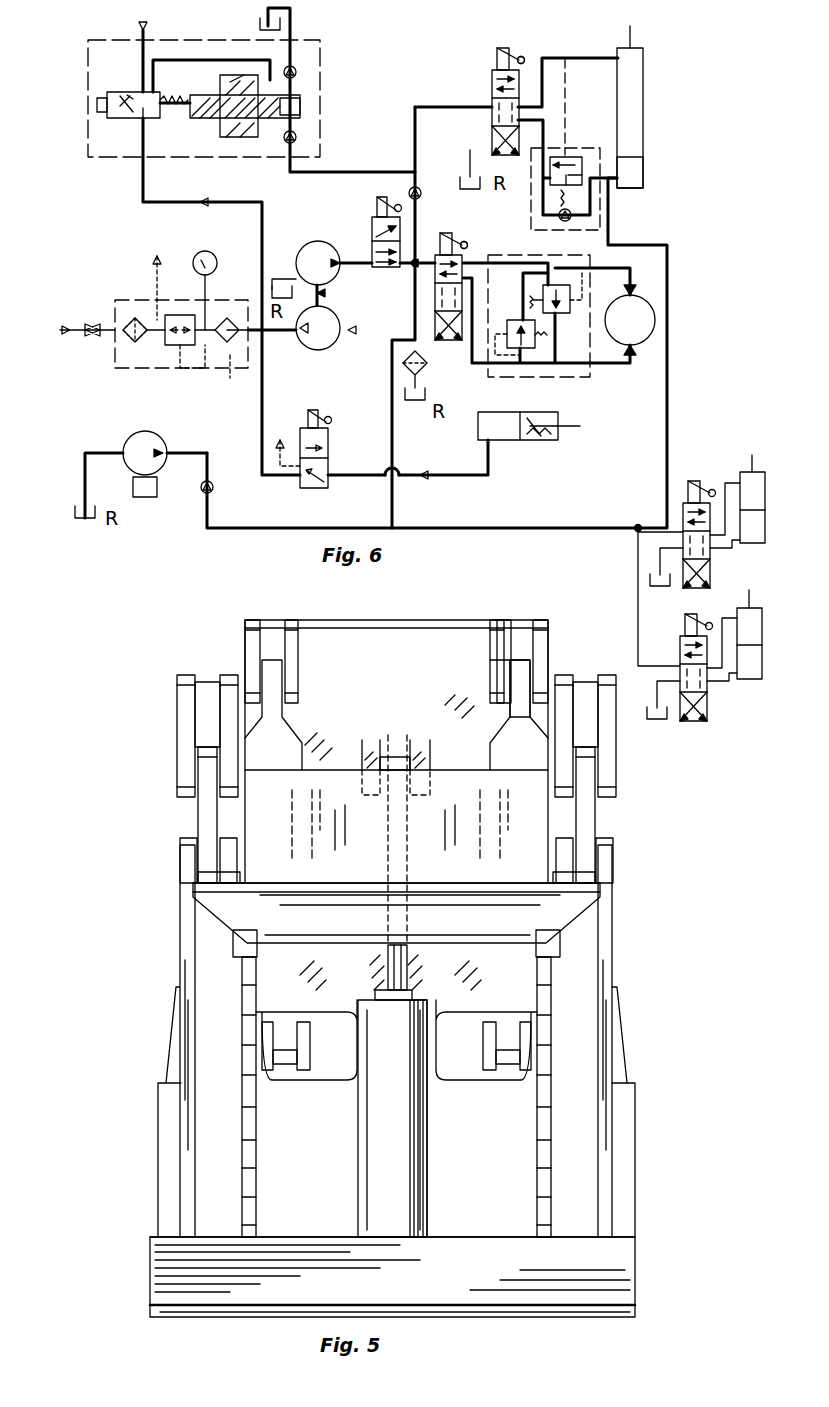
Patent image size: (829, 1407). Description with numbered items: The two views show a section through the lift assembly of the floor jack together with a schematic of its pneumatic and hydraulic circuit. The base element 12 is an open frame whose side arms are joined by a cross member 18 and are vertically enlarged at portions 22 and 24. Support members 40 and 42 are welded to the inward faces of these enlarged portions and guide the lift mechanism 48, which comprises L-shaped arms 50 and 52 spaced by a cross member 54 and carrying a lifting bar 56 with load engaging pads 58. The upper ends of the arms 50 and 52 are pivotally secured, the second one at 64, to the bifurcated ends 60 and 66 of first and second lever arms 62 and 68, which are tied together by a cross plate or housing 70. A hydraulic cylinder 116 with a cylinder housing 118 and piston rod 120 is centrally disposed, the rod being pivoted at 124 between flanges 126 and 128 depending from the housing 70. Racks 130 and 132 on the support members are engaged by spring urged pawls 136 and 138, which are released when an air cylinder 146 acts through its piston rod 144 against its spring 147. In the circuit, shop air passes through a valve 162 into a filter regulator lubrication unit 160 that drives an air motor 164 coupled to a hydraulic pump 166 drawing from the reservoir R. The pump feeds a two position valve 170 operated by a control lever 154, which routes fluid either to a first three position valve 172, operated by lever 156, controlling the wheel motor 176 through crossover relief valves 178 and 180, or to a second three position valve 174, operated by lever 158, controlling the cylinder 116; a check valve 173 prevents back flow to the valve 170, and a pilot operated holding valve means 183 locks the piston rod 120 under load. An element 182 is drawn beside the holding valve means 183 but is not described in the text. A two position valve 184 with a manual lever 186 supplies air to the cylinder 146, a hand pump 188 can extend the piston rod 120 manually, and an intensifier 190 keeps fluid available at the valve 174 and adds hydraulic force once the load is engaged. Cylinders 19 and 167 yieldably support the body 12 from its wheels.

In FIG. 5, the base element 12 is at (185, 1272).
In FIG. 5, the cross member 18 is at (620, 1262).
In FIG. 5, the vertically enlarged portion 22 is at (168, 1098).
In FIG. 5, the vertically enlarged portion 24 is at (623, 1115).
In FIG. 5, the support member 40 is at (192, 905).
In FIG. 5, the support member 42 is at (605, 980).
In FIG. 5, the lift mechanism 48 is at (240, 822).
In FIG. 5, the L-shaped arm member 50 is at (272, 807).
In FIG. 5, the L-shaped arm member 52 is at (535, 828).
In FIG. 5, the cross member 54 is at (440, 840).
In FIG. 5, the lifting bar 56 is at (318, 905).
In FIG. 5, the load engaging pads 58 is at (205, 882).
In FIG. 5, the bifurcated end 60 is at (250, 642).
In FIG. 5, the first lever arm 62 is at (272, 620).
In FIG. 5, the pivot connection 64 is at (532, 683).
In FIG. 5, the bifurcated end 66 is at (545, 638).
In FIG. 5, the second lever arm 68 is at (520, 622).
In FIG. 5, the cross plate or housing 70 is at (425, 650).
In FIG. 6, the hydraulic cylinder 116 is at (652, 118).
In FIG. 5, the hydraulic cylinder 116 is at (385, 1110).
In FIG. 6, the cylinder housing 118 is at (643, 148).
In FIG. 5, the cylinder housing 118 is at (383, 1167).
In FIG. 6, the piston rod 120 is at (636, 35).
In FIG. 5, the piston rod 120 is at (400, 967).
In FIG. 5, the pivot connection 124 is at (380, 785).
In FIG. 5, the depending flange 126 is at (362, 793).
In FIG. 5, the depending flange 128 is at (430, 793).
In FIG. 5, the rack member 130 is at (250, 1000).
In FIG. 5, the rack member 132 is at (548, 1037).
In FIG. 5, the pawl member 136 is at (245, 940).
In FIG. 5, the pawl member 138 is at (550, 947).
In FIG. 6, the piston rod 144 is at (568, 430).
In FIG. 6, the air cylinder 146 is at (540, 440).
In FIG. 6, the spring 147 is at (530, 420).
In FIG. 6, the control lever 154 is at (405, 190).
In FIG. 6, the control lever 156 is at (466, 241).
In FIG. 6, the control lever 158 is at (522, 55).
In FIG. 6, the filter regulator lubrication unit 160 is at (143, 300).
In FIG. 6, the valve 162 is at (95, 340).
In FIG. 6, the air motor 164 is at (312, 350).
In FIG. 6, the hydraulic pump 166 is at (313, 243).
In FIG. 6, the cylinder 167 is at (762, 628).
In FIG. 6, the two position shuttle valve 170 is at (372, 228).
In FIG. 6, the first three position shuttle valve 172 is at (450, 340).
In FIG. 6, the check valve 173 is at (422, 192).
In FIG. 6, the second three position shuttle valve 174 is at (492, 92).
In FIG. 6, the hydraulic wheel motor 176 is at (657, 318).
In FIG. 6, the crossover relief valve 178 is at (570, 292).
In FIG. 6, the crossover relief valve 180 is at (535, 346).
In FIG. 6, the pilot operated check valve 182 is at (570, 157).
In FIG. 6, the pilot operated holding valve means 183 is at (558, 220).
In FIG. 6, the two position shuttle valve 184 is at (330, 468).
In FIG. 6, the manual actuation lever 186 is at (345, 402).
In FIG. 6, the hand pump 188 is at (165, 442).
In FIG. 6, the intensifier 190 is at (88, 55).
In FIG. 6, the cylinder 19 is at (765, 495).